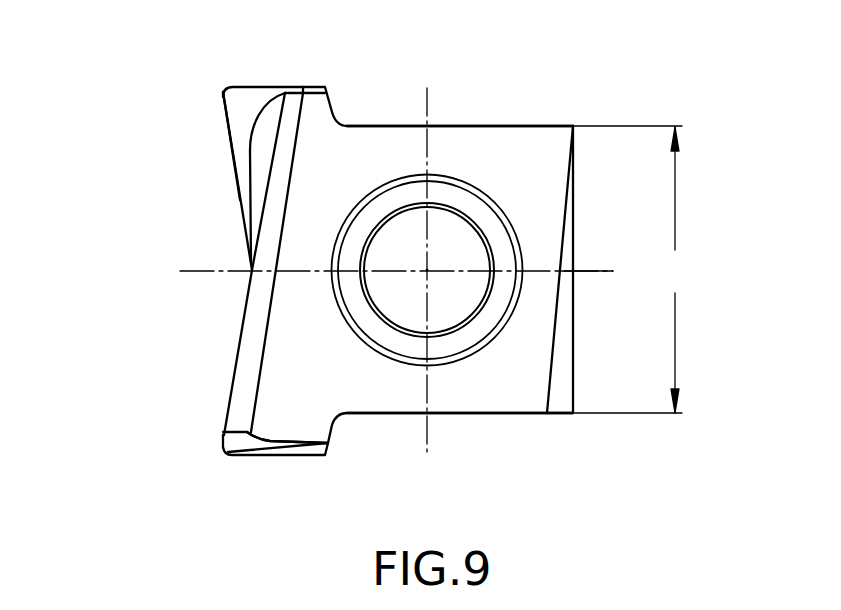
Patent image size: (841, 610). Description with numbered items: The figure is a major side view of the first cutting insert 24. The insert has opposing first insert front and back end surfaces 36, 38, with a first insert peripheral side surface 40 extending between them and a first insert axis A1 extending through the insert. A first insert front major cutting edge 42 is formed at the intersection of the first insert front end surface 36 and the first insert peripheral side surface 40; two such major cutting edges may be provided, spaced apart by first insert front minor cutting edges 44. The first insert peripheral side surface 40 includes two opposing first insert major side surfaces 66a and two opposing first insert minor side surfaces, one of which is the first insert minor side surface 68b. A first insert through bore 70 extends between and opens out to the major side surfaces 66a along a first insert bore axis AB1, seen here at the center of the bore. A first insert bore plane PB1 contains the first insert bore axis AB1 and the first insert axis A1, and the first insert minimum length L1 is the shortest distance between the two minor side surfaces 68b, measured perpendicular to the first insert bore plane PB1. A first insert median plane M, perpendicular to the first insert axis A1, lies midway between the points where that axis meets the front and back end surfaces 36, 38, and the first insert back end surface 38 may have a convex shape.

The first cutting insert 24 is at (543, 90).
The first insert front end surface 36 is at (243, 133).
The first insert back end surface 38 is at (562, 388).
The first insert peripheral side surface 40 is at (297, 403).
The first insert front major cutting edge 42 is at (233, 163).
The first insert front minor cutting edge 44 is at (268, 86).
The first insert major side surface 66a is at (465, 127).
The first insert minor side surface 68b is at (453, 415).
The first insert through bore 70 is at (405, 308).
The first insert bore axis AB1 is at (428, 269).
The first insert median plane M is at (429, 274).
The first insert bore plane PB1 is at (338, 271).
The first insert axis A1 is at (604, 272).
The first insert minimum length L1 is at (653, 269).